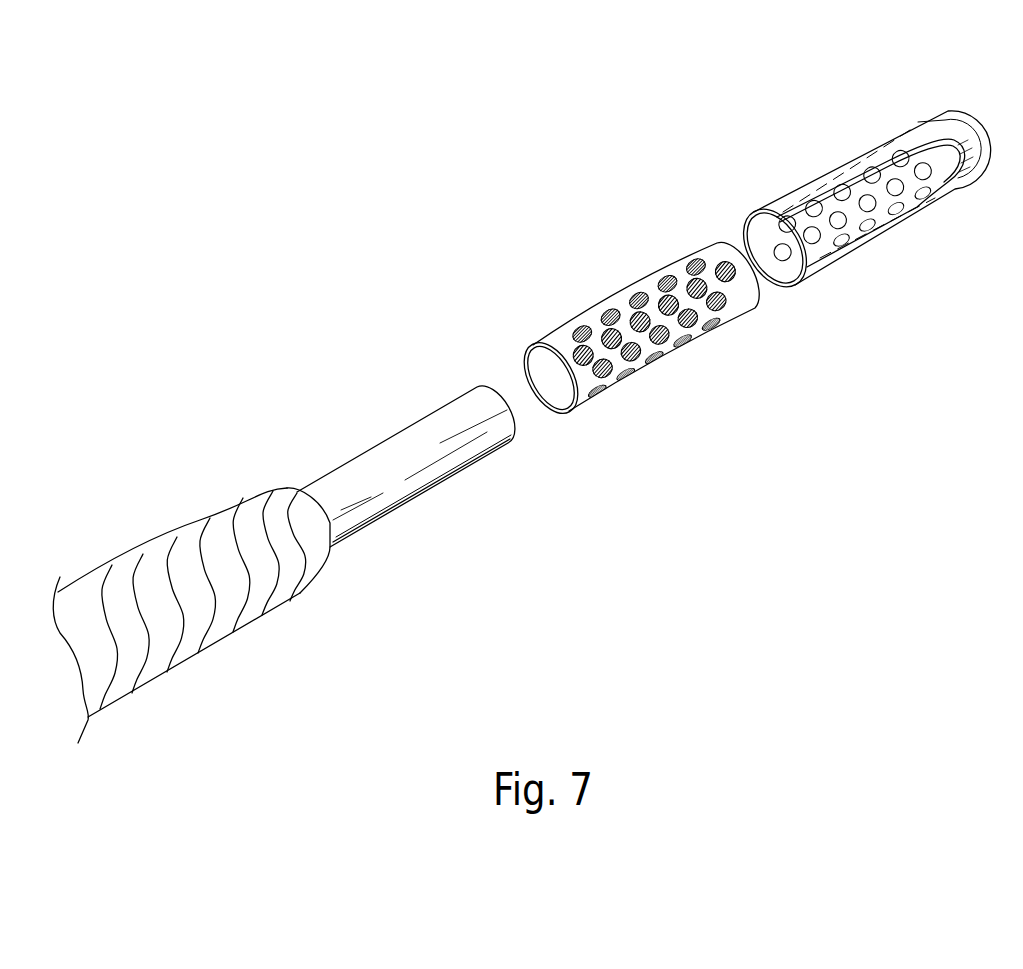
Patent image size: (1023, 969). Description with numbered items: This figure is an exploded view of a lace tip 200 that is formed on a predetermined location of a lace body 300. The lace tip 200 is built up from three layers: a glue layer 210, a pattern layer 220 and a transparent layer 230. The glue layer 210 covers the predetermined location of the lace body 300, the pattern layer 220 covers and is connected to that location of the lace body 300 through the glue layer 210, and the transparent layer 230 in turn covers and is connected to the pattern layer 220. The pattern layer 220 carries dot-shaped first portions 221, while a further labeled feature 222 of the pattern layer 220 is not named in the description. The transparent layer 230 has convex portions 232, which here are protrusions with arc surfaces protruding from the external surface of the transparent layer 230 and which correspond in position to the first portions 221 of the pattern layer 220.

The lace tip 200 is at (817, 73).
The glue layer 210 is at (407, 437).
The pattern layer 220 is at (636, 345).
The first portions 221 is at (566, 368).
The holes 222 is at (597, 393).
The transparent layer 230 is at (861, 219).
The convex portions 232 is at (781, 258).
The lace body 300 is at (194, 520).